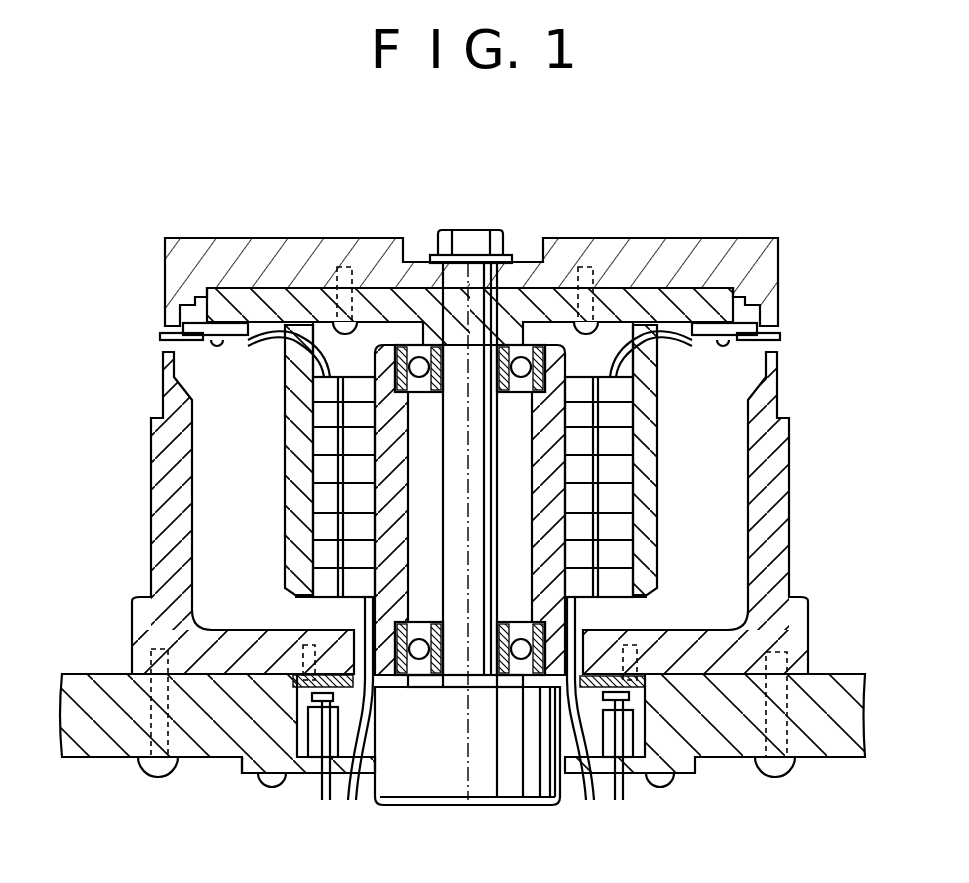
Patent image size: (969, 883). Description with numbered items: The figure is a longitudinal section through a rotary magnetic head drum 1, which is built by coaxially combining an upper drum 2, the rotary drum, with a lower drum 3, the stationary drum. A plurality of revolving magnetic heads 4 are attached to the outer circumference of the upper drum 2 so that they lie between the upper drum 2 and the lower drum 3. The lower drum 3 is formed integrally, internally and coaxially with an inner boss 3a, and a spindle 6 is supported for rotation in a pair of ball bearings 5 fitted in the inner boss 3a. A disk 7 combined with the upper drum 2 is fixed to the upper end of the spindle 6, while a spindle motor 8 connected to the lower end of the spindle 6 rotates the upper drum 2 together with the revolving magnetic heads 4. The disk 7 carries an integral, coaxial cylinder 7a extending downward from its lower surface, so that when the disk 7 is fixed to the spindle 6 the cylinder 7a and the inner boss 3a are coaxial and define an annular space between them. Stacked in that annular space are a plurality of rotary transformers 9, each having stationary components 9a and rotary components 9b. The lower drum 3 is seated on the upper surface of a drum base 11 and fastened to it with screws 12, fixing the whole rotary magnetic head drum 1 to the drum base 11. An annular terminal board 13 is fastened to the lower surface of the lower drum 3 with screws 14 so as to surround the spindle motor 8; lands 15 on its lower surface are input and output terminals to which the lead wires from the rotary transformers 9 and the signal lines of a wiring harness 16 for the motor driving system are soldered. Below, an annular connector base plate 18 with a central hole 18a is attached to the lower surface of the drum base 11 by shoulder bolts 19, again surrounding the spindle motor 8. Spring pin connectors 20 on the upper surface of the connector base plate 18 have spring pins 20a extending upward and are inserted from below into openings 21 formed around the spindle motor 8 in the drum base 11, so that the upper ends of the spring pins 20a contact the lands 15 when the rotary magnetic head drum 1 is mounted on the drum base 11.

The rotary magnetic head drum 1 is at (806, 285).
The upper drum 2 is at (725, 262).
The lower drum 3 is at (778, 531).
The inner boss 3a is at (545, 494).
The revolving magnetic heads 4 is at (160, 336).
The ball bearings 5 is at (509, 343).
The spindle 6 is at (460, 275).
The disk 7 is at (613, 300).
The cylinder 7a is at (648, 452).
The spindle motor 8 is at (430, 770).
The rotary transformers 9 is at (300, 495).
The stationary components 9a is at (352, 558).
The rotary components 9b is at (322, 438).
The drum base 11 is at (842, 685).
The screws 12 is at (145, 770).
The terminal board 13 is at (603, 690).
The screws 14 is at (300, 655).
The lands 15 is at (297, 723).
The wiring harness 16 is at (283, 337).
The connector base plate 18 is at (605, 778).
The central hole 18a is at (550, 767).
The shoulder bolts 19 is at (272, 789).
The spring pin connectors 20 is at (334, 777).
The spring pins 20a is at (300, 775).
The openings 21 is at (243, 758).